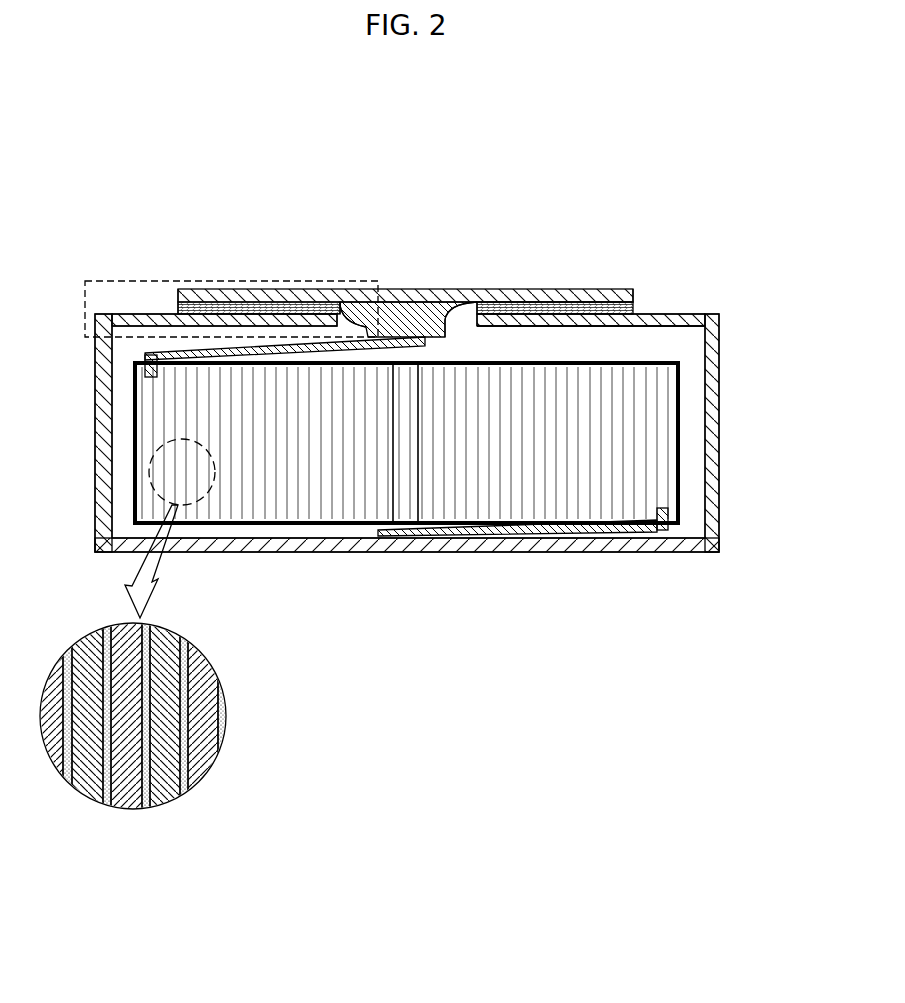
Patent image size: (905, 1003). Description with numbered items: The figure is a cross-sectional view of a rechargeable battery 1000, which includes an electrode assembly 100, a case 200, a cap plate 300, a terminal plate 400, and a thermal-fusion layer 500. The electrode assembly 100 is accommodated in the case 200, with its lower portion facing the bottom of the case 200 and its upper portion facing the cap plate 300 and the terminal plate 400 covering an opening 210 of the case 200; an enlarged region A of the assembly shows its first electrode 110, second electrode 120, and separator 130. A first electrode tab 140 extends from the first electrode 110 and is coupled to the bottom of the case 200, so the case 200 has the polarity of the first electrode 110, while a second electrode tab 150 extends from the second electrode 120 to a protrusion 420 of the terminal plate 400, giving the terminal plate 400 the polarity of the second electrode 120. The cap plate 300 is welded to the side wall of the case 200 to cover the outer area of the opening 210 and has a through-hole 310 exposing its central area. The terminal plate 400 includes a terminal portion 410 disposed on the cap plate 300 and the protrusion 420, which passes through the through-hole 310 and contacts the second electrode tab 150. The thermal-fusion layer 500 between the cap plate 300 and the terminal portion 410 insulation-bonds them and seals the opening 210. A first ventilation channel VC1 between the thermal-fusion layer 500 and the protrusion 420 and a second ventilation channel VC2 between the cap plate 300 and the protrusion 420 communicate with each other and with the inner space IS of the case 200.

The rechargeable battery 1000 is at (423, 169).
The electrode assembly 100 is at (324, 490).
The first electrode 110 is at (129, 717).
The second electrode 120 is at (126, 717).
The separator 130 is at (144, 717).
The first electrode tab 140 is at (618, 532).
The second electrode tab 150 is at (205, 353).
The case 200 is at (732, 510).
The opening 210 is at (576, 318).
The cap plate 300 is at (686, 306).
The through-hole 310 is at (464, 318).
The terminal plate 400 is at (405, 274).
The terminal portion 410 is at (508, 292).
The protrusion 420 is at (408, 318).
The thermal-fusion layer 500 is at (293, 313).
The first ventilation channel VC1 is at (340, 303).
The second ventilation channel VC2 is at (350, 320).
The inner space IS is at (556, 346).
The region A is at (115, 281).